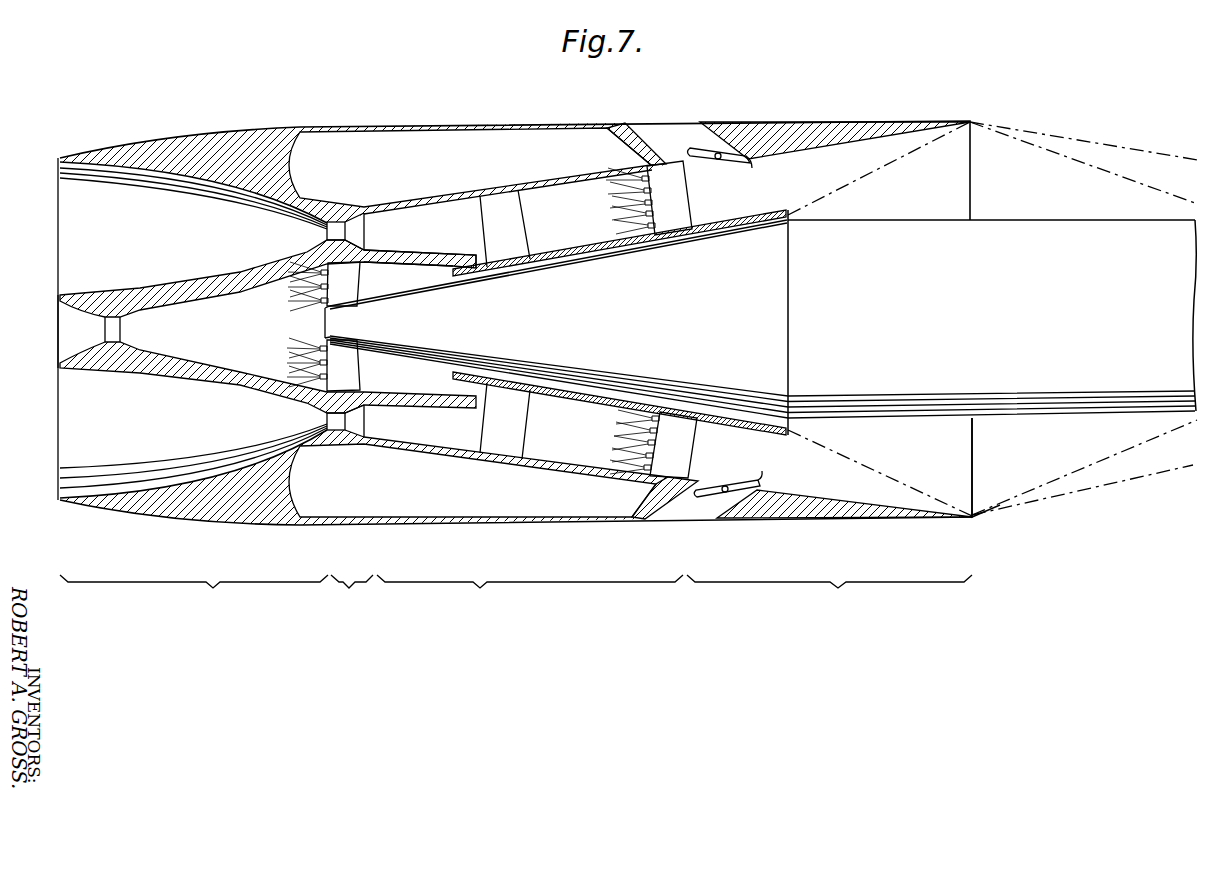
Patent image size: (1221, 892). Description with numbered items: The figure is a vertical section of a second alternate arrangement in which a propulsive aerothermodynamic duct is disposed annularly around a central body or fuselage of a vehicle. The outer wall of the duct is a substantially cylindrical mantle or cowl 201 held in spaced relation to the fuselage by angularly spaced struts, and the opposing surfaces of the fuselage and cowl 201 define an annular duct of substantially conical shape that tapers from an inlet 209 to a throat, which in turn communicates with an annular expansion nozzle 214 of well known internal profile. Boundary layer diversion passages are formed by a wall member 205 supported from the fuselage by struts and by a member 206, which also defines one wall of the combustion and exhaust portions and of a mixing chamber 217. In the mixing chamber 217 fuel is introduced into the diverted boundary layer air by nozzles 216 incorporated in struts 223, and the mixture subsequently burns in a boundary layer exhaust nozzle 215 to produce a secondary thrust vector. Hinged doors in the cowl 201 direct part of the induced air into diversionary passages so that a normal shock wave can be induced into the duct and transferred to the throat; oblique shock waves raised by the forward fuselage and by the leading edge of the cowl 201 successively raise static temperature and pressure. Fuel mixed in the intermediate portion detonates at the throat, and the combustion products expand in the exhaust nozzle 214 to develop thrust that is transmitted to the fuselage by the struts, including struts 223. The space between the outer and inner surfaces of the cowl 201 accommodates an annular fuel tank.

The cowl 201 is at (873, 121).
The wall member 205 is at (596, 247).
The member 206 is at (388, 263).
The inlet 209 is at (980, 487).
The annular expansion nozzle 214 is at (68, 482).
The boundary layer exhaust nozzle 215 is at (68, 339).
The nozzles 216 is at (327, 330).
The mixing chamber 217 is at (214, 338).
The struts 223 is at (352, 368).